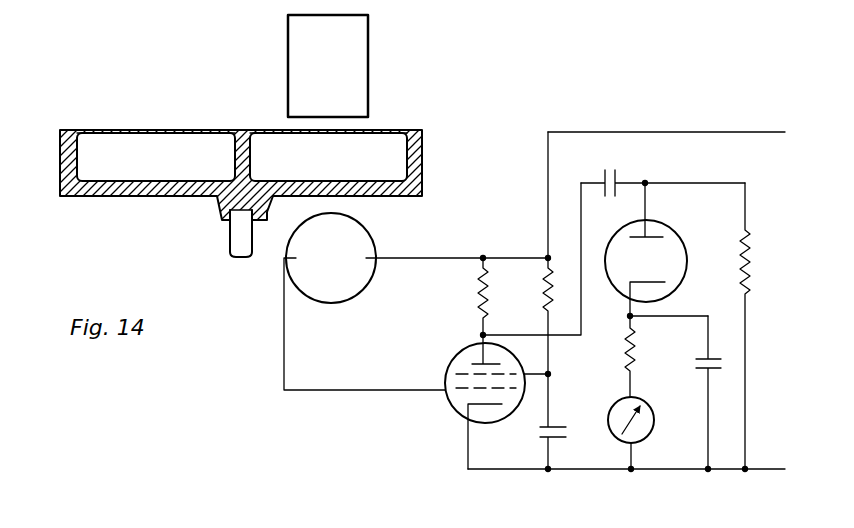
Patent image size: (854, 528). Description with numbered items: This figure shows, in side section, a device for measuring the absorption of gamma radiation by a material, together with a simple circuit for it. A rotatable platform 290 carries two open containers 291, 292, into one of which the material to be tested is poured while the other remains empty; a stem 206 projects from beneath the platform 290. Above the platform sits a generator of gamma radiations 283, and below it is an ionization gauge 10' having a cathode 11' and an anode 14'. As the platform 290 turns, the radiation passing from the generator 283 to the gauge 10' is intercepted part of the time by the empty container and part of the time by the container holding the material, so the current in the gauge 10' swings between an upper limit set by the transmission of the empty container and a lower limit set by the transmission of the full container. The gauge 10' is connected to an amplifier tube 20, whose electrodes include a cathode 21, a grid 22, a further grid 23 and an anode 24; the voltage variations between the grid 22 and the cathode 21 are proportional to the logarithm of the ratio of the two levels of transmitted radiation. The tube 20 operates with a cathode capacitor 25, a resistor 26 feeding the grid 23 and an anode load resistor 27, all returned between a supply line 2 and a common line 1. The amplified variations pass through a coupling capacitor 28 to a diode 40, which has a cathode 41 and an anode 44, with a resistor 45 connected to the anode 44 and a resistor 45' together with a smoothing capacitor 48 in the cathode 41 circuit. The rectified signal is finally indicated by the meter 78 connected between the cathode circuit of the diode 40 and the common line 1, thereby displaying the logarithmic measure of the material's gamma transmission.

The negative supply line 1 is at (766, 470).
The positive supply line 2 is at (752, 134).
The ionization gauge 10' is at (351, 256).
The cathode 11' is at (457, 279).
The anode 14' is at (342, 324).
The tube 20 is at (452, 410).
The cathode 21 is at (466, 424).
The grid 22 is at (446, 382).
The screen grid of tube 20 23 is at (525, 372).
The anode of tube 20 24 is at (478, 348).
The cathode capacitor 25 is at (558, 430).
The screen resistor 26 is at (546, 294).
The anode load resistor 27 is at (478, 294).
The coupling capacitor 28 is at (618, 183).
The diode 40 is at (690, 252).
The cathode of tube 40 41 is at (630, 300).
The anode of tube 40 44 is at (648, 226).
The anode resistor 45 is at (762, 326).
The cathode resistor 45' is at (653, 356).
The smoothing capacitor 48 is at (704, 370).
The meter 78 is at (654, 426).
The outlet nozzle 206 is at (230, 243).
The generator of gamma radiations 283 is at (288, 62).
The rotatable platform 290 is at (138, 200).
The open container 291 is at (275, 131).
The open container 292 is at (155, 131).